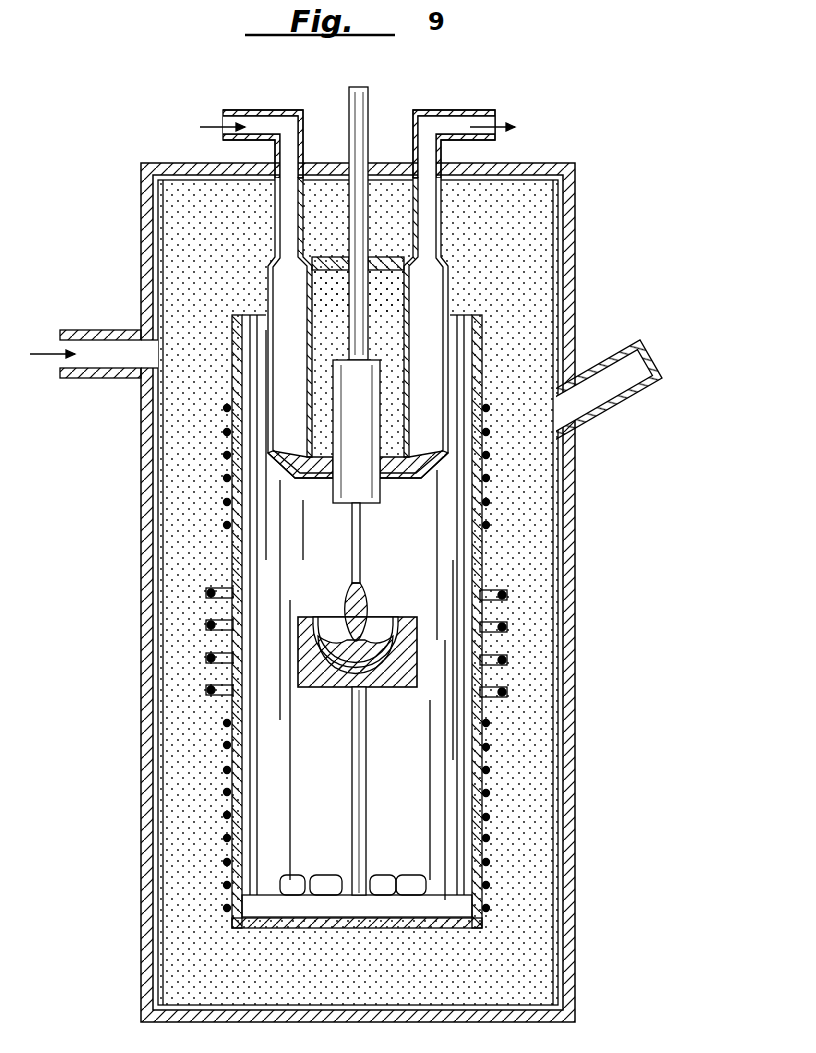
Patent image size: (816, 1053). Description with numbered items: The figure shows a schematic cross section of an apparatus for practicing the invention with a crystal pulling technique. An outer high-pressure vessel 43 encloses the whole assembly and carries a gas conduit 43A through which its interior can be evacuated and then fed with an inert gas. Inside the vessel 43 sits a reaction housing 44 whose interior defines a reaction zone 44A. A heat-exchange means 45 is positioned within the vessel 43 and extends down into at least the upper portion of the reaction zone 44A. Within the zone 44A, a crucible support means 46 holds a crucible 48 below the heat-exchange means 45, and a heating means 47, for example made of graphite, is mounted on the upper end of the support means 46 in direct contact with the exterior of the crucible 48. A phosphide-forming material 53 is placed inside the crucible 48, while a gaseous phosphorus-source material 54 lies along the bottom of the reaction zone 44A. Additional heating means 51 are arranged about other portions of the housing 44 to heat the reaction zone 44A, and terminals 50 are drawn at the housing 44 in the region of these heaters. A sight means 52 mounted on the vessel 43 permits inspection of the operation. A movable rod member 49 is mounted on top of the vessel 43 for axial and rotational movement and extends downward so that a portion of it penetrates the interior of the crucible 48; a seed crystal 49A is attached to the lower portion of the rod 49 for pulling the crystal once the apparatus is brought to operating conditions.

The outer high-pressure vessel 43 is at (382, 592).
The gas conduit 43A is at (75, 379).
The reaction housing 44 is at (423, 621).
The reaction zone 44A is at (418, 551).
The heat-exchange means 45 is at (357, 294).
The crucible support means 46 is at (381, 791).
The heating means 47 is at (412, 617).
The crucible 48 is at (360, 615).
The movable rod member 49 is at (371, 289).
The seed crystal 49A is at (351, 581).
The terminals 50 is at (302, 642).
The additional heating means 51 is at (420, 658).
The sight means 52 is at (597, 396).
The phosphide-forming material 53 is at (350, 628).
The gaseous phosphorus-source material 54 is at (353, 862).